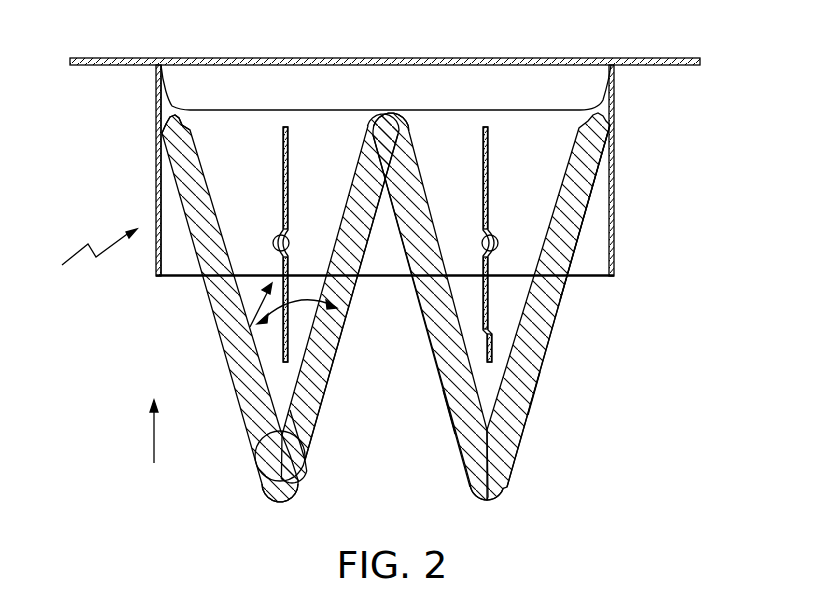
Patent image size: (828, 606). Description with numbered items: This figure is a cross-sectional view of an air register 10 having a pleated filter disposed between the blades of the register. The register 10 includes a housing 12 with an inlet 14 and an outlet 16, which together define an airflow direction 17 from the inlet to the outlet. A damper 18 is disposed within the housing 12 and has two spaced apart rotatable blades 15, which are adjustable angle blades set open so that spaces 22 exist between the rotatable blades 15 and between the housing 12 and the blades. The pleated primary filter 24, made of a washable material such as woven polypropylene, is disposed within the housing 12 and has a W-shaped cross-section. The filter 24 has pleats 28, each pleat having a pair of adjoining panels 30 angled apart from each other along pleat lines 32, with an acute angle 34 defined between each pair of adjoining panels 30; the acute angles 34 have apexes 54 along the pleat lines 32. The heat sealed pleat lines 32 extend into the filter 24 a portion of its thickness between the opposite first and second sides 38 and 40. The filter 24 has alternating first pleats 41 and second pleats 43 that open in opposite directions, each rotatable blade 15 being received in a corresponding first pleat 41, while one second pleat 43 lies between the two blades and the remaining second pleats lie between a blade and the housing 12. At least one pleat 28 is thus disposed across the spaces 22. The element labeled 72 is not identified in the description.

The register 10 is at (82, 256).
The housing 12 is at (615, 203).
The inlet 14 is at (167, 277).
The rotatable blades 15 is at (290, 162).
The outlet 16 is at (178, 72).
The airflow direction 17 is at (153, 437).
The damper 18 is at (228, 306).
The spaces 22 is at (229, 194).
The pleated primary filter 24 is at (514, 470).
The pleats 28 is at (158, 178).
The adjoining panels 30 is at (230, 262).
The pleat lines 32 is at (392, 113).
The acute angle 34 is at (338, 311).
The first side 38 is at (562, 298).
The second side 40 is at (199, 160).
The first pleats 41 is at (368, 141).
The second pleats 43 is at (445, 390).
The apexes 54 is at (254, 452).
The top plate 72 is at (483, 58).